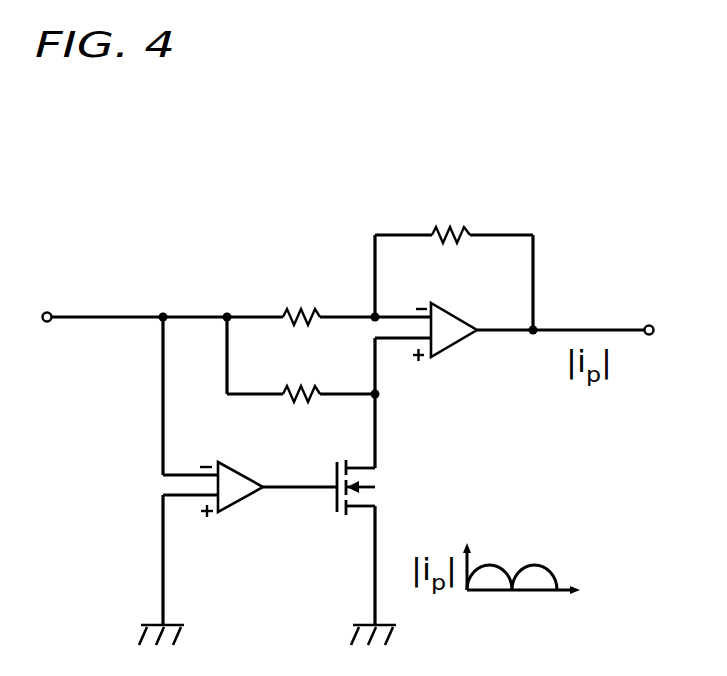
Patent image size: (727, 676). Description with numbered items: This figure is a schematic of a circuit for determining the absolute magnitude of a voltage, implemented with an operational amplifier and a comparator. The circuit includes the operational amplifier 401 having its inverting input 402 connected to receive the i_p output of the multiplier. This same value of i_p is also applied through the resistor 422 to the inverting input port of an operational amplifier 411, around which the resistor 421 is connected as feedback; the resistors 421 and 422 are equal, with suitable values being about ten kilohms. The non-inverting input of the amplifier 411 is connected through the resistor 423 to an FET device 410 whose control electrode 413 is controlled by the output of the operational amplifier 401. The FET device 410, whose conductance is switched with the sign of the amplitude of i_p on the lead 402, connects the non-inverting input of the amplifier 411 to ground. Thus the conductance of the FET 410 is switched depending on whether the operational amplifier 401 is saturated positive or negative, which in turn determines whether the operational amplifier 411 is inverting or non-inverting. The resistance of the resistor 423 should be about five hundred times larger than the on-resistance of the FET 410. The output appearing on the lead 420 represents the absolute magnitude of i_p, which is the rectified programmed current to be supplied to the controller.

The inverting input 402 is at (98, 304).
The resistor 422 is at (301, 300).
The resistor 423 is at (301, 413).
The resistor 421 is at (450, 221).
The operational amplifier 411 is at (456, 350).
The output lead 420 is at (585, 320).
The operational amplifier 401 is at (245, 508).
The control electrode 413 is at (301, 497).
The FET device 410 is at (380, 487).